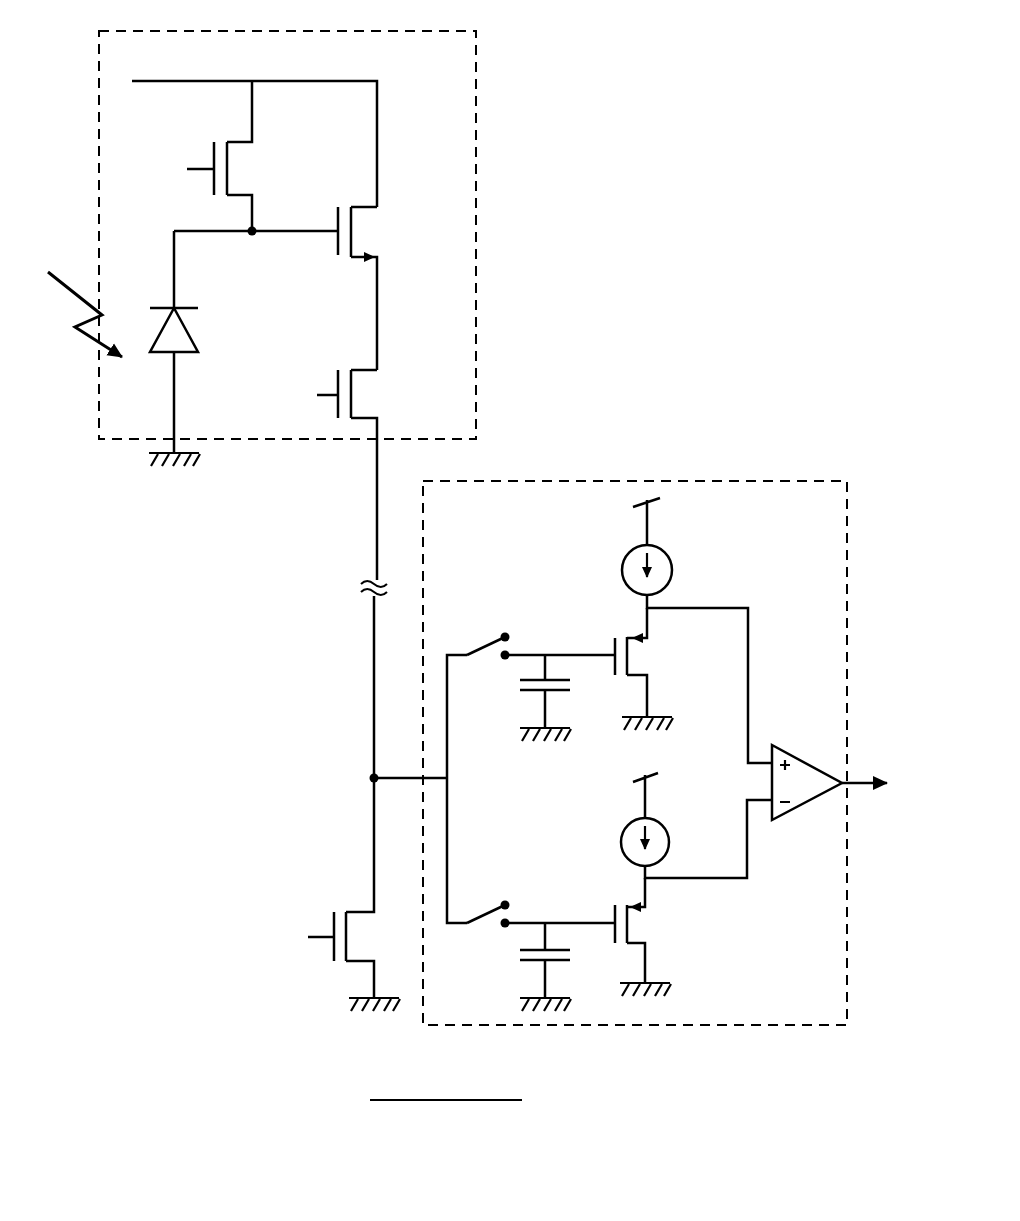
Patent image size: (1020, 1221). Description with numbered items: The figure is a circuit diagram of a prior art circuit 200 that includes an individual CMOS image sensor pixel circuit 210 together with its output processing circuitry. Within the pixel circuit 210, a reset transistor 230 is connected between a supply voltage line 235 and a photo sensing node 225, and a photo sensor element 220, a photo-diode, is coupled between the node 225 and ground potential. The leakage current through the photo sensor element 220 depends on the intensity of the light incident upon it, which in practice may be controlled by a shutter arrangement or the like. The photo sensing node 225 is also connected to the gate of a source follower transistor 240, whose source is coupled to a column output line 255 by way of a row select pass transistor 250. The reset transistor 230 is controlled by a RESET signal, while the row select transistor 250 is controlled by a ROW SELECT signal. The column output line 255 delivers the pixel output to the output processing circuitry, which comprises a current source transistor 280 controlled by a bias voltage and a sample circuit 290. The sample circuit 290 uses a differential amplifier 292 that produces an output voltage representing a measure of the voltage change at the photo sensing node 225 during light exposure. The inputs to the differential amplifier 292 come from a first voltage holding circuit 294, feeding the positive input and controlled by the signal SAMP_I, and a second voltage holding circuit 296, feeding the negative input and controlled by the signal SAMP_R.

The circuit 200 is at (642, 139).
The CMOS image sensor pixel circuit 210 is at (287, 238).
The photo sensor element 220 is at (205, 348).
The photo sensing node 225 is at (254, 234).
The reset transistor 230 is at (198, 156).
The supply voltage line 235 is at (244, 144).
The source follower transistor 240 is at (399, 285).
The row select pass transistor 250 is at (336, 399).
The column output line 255 is at (373, 705).
The current source transistor 280 is at (329, 893).
The sample circuit 290 is at (640, 741).
The differential amplifier 292 is at (806, 801).
The first voltage holding circuit 294 is at (560, 548).
The second voltage holding circuit 296 is at (558, 842).